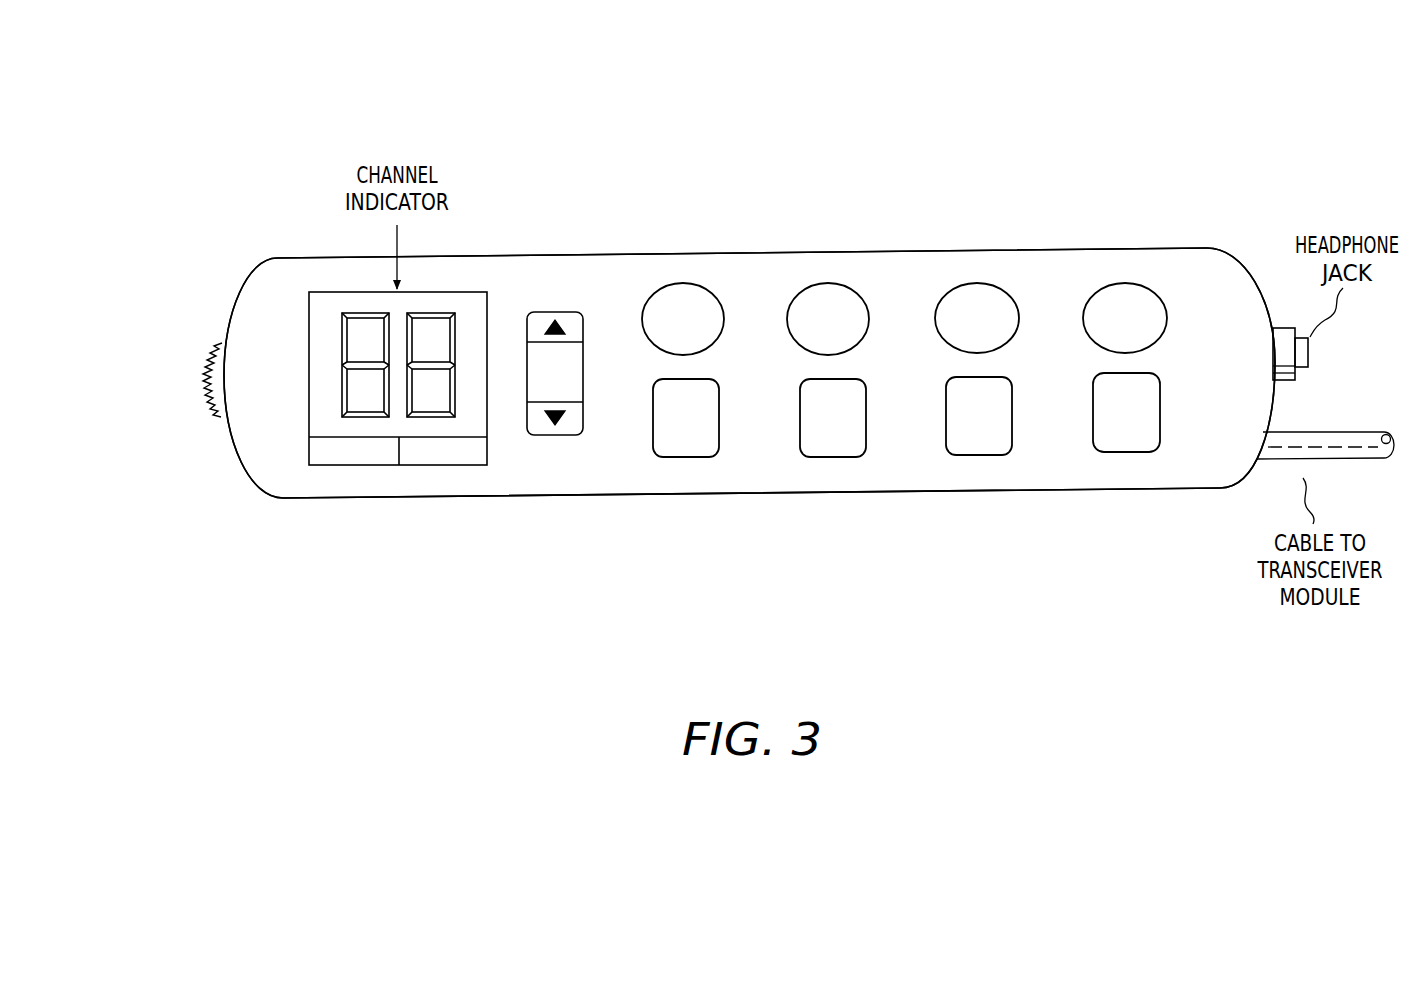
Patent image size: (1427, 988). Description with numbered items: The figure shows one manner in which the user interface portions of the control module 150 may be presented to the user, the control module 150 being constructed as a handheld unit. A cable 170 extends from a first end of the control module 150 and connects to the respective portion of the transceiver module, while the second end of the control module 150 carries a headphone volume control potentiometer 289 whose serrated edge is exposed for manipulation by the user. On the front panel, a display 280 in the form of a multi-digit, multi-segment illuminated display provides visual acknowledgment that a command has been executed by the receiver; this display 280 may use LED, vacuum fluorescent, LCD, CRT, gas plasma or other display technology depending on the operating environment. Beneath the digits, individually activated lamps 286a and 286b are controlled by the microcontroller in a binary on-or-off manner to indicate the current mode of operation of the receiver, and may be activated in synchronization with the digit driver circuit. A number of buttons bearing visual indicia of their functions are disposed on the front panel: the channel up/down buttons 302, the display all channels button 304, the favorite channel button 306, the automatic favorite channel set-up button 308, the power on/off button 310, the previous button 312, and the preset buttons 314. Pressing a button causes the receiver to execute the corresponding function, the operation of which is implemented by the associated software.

The control module 150 is at (1240, 200).
The cable 170 is at (1340, 431).
The display 280 is at (270, 436).
The lamp 286a is at (339, 467).
The lamp 286b is at (457, 467).
The headphone volume control potentiometer 289 is at (180, 155).
The channel up/down buttons 302 is at (533, 129).
The display all channels button 304 is at (662, 129).
The favorite channel button 306 is at (807, 129).
The automatic favorite channel set-up button 308 is at (953, 72).
The power on/off button 310 is at (1105, 124).
The previous button 312 is at (1127, 455).
The preset buttons 314 is at (1032, 505).